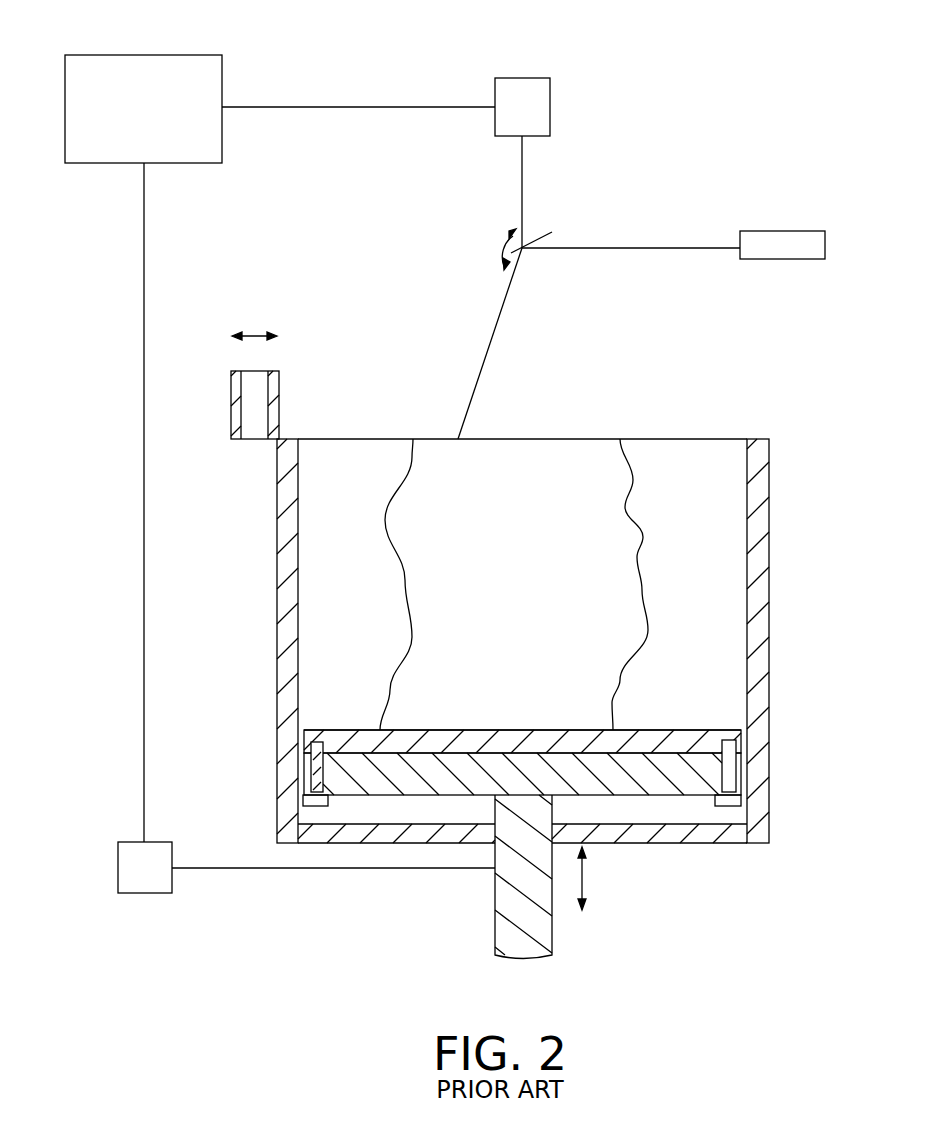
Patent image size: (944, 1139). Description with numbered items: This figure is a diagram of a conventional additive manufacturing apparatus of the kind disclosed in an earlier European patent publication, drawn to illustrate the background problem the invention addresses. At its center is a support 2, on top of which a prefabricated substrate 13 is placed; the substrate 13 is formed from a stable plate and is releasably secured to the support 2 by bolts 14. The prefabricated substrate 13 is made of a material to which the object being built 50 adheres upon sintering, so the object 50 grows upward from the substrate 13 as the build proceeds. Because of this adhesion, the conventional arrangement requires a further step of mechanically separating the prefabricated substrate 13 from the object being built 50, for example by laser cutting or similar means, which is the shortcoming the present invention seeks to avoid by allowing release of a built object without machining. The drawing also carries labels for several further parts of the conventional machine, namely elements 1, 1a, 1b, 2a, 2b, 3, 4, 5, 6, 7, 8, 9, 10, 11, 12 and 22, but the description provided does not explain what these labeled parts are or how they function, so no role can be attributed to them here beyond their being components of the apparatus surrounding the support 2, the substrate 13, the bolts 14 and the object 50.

The powder bed container / build tank 1 is at (558, 630).
The side wall of container 1a is at (756, 437).
The bottom of container 1b is at (716, 826).
The support 2 is at (521, 741).
The top plate of build platform 2a is at (688, 745).
The platform support shaft 2b is at (624, 797).
The platform drive / lifting device 3 is at (162, 880).
The laser source 4 is at (797, 240).
The laser beam 5 is at (688, 246).
The deflection mirror / scanner 6 is at (536, 236).
The deflected laser beam 7 is at (516, 300).
The powder bed surface / working plane 8 is at (697, 437).
The scanner control 9 is at (512, 92).
The recoater / powder applicator 10 is at (250, 396).
The object being built 11 is at (647, 452).
The control unit 12 is at (180, 68).
The prefabricated substrate 13 is at (538, 740).
The bolts 14 is at (315, 783).
The seal holder / gap seal 22 is at (311, 752).
The object being built 50 is at (530, 457).